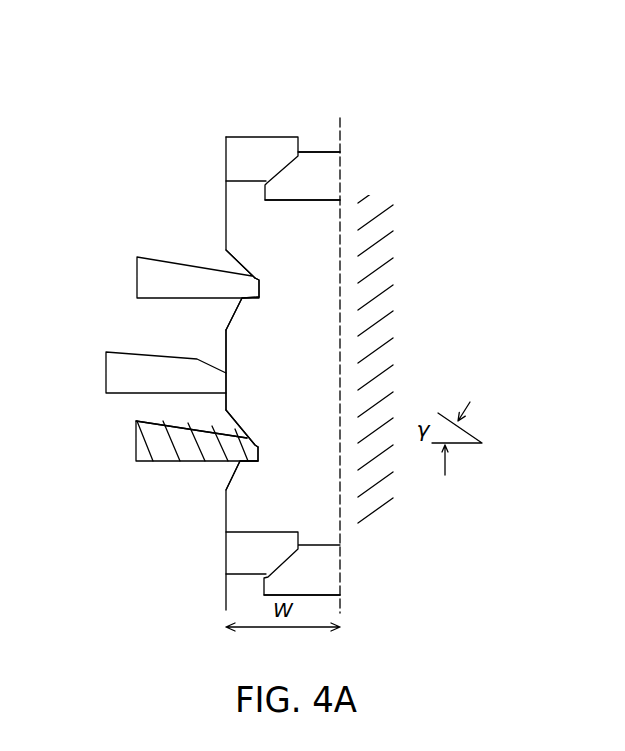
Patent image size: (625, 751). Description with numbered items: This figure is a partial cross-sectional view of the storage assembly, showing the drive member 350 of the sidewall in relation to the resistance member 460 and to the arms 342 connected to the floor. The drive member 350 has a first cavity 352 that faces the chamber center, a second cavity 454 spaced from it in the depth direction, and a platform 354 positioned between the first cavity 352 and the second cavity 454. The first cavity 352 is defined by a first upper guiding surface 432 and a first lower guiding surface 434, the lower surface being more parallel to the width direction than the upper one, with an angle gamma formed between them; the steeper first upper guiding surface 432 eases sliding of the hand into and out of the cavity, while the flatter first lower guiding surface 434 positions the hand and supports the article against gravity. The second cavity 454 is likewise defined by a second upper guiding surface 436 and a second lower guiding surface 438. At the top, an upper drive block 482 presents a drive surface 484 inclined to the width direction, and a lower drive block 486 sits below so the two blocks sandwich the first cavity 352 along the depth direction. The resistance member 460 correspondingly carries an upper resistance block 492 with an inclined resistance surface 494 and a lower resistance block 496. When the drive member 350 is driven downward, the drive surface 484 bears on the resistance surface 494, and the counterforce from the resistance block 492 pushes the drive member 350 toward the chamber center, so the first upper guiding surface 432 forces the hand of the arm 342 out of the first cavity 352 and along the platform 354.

The drive member 350 is at (267, 97).
The resistance member 460 is at (326, 103).
The drive block 482 is at (252, 150).
The drive surface 484 is at (298, 154).
The resistance surface 494 is at (300, 157).
The resistance block 492 is at (322, 182).
The lower drive block 486 is at (245, 555).
The lower resistance block 496 is at (325, 565).
The arm 342 is at (145, 282).
The second cavity 454 is at (247, 273).
The second upper guiding surface 436 is at (243, 270).
The second lower guiding surface 438 is at (250, 298).
The platform 354 is at (225, 337).
The first cavity 352 is at (243, 435).
The first upper guiding surface 432 is at (243, 433).
The first lower guiding surface 434 is at (247, 460).